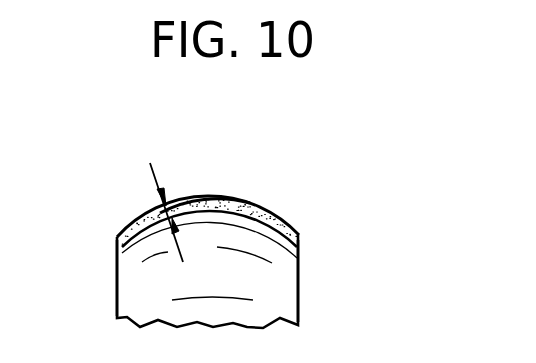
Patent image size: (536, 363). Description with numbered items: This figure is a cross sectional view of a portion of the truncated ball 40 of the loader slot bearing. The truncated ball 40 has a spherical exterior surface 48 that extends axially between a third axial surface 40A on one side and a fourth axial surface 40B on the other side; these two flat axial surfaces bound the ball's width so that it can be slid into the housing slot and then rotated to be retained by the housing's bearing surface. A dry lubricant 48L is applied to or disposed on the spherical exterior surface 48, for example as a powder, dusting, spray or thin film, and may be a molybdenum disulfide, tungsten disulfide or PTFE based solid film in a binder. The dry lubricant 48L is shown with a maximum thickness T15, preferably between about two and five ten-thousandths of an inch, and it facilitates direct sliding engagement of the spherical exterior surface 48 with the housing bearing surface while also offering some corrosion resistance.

The truncated ball 40 is at (322, 218).
The third axial surface 40A is at (117, 280).
The fourth axial surface 40B is at (299, 298).
The spherical exterior surface 48 is at (238, 204).
The dry lubricant 48L is at (197, 204).
The maximum thickness T15 is at (181, 247).